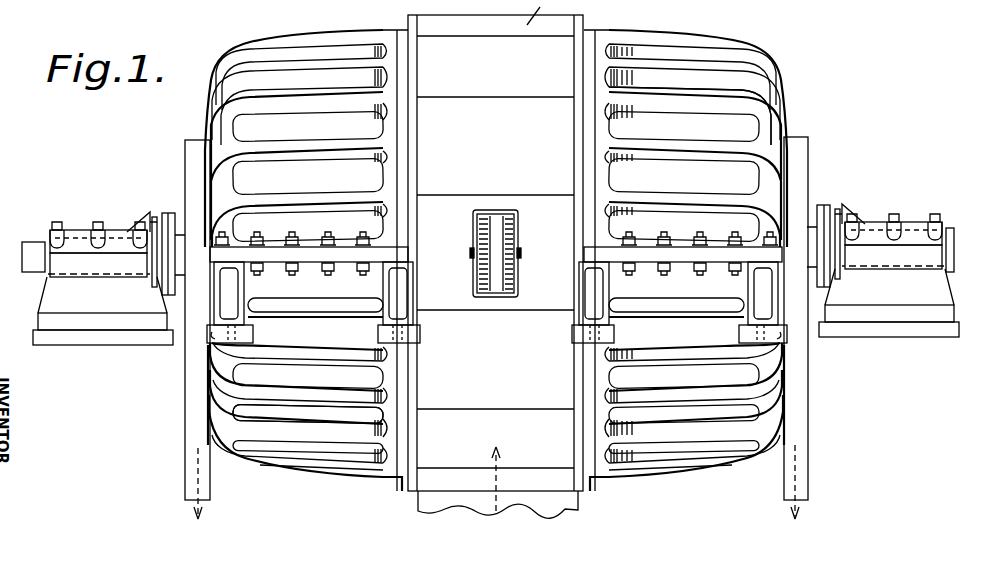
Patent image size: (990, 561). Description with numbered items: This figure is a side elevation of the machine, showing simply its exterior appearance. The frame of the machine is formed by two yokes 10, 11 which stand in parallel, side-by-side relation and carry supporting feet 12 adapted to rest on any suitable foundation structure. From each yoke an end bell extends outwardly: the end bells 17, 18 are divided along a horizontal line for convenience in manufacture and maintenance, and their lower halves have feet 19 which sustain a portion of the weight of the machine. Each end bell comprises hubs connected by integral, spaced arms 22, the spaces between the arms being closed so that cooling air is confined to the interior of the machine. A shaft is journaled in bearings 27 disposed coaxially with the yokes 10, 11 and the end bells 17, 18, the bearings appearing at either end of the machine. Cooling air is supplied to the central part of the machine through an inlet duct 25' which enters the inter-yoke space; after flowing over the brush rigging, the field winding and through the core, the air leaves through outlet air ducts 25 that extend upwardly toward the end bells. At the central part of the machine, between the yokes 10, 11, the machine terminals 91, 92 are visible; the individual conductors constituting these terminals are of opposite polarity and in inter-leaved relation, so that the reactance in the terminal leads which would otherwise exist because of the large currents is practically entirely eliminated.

The yoke 10 is at (405, 33).
The yoke 11 is at (582, 42).
The supporting feet 12 is at (413, 333).
The end bell 17 is at (282, 36).
The end bell 18 is at (695, 34).
The feet 19 is at (208, 342).
The arms 22 is at (732, 100).
The outlet air ducts 25 is at (492, 328).
The inlet duct 25' is at (470, 504).
The bearings 27 is at (75, 232).
The machine terminal 91 is at (475, 227).
The machine terminal 92 is at (512, 275).